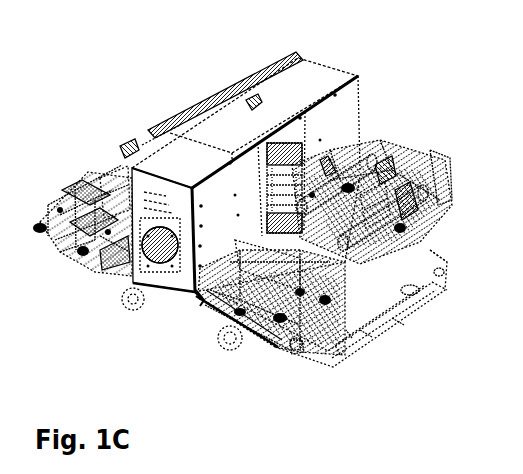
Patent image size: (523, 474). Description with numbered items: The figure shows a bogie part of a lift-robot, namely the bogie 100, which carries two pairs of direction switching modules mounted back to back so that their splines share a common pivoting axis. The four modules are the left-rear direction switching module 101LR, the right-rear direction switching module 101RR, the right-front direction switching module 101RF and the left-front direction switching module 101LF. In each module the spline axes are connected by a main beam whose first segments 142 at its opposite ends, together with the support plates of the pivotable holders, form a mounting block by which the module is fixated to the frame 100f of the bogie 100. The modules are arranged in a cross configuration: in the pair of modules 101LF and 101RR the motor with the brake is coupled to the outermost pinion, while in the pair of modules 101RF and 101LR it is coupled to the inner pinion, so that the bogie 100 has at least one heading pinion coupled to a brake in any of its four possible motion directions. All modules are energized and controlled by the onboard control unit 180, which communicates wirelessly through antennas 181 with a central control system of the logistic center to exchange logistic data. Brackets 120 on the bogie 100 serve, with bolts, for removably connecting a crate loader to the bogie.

The bogie 100 is at (427, 322).
The frame of the bogie 100f is at (297, 350).
The direction switching module 101LR is at (76, 162).
The direction switching module 101RR is at (200, 86).
The direction switching module 101RF is at (494, 133).
The direction switching module 101LF is at (201, 345).
The bracket 120 is at (227, 350).
The first segment of the main beam 142 is at (117, 200).
The onboard control unit 180 is at (308, 92).
The antenna 181 is at (362, 78).